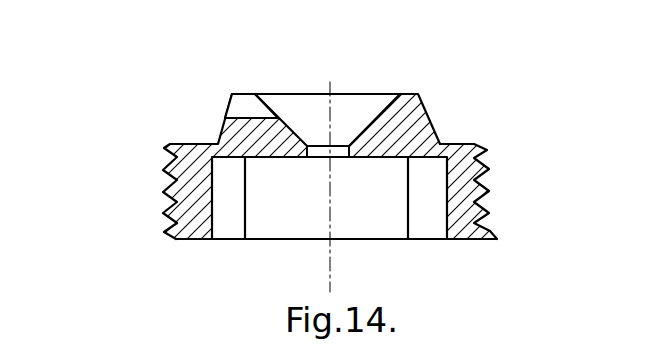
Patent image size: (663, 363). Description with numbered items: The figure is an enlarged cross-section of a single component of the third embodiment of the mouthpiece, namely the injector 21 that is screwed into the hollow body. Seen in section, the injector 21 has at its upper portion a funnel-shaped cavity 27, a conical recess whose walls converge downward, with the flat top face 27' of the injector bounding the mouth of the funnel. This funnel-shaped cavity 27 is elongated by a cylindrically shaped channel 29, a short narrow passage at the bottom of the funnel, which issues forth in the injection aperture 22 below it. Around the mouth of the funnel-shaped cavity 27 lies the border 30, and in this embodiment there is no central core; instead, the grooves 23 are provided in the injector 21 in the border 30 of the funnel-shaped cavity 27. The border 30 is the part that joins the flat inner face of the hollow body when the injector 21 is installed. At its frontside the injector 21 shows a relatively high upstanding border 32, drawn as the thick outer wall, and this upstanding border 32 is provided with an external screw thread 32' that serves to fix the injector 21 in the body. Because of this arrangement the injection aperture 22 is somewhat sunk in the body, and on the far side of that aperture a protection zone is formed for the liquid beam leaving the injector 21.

The injector 21 is at (150, 190).
The injection aperture 22 is at (340, 158).
The grooves 23 is at (240, 108).
The funnel-shaped cavity 27 is at (348, 83).
The top face 27' is at (316, 57).
The cylindrically shaped channel 29 is at (312, 158).
The border 30 is at (410, 93).
The upstanding border 32 is at (485, 220).
The external screw thread 32' is at (149, 263).